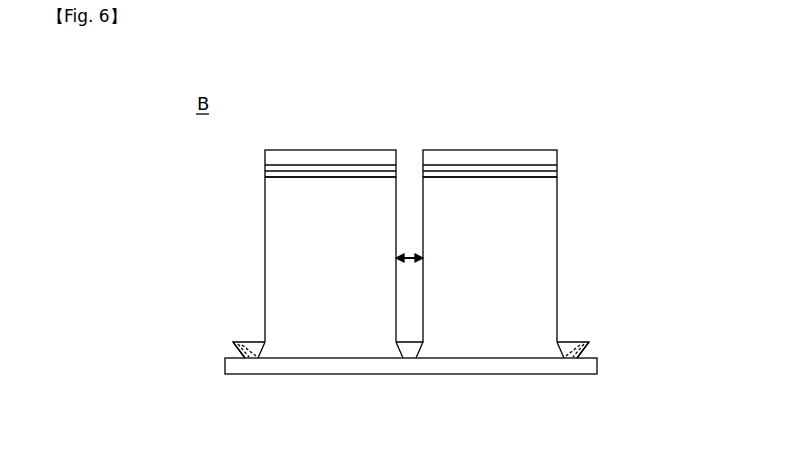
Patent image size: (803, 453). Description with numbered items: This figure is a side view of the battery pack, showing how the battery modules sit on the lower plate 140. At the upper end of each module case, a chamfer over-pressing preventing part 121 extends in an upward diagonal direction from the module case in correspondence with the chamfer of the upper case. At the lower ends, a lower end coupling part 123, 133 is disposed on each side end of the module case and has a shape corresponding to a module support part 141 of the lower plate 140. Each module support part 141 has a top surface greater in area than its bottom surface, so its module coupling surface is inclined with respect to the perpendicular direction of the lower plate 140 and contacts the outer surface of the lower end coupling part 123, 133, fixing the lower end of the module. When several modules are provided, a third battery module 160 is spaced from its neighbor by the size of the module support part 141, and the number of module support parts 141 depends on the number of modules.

The first chamfer over-pressing preventing part 121 is at (329, 158).
The lower end coupling part 123 is at (265, 375).
The lower end coupling part 133 is at (397, 376).
The lower plate 140 is at (535, 367).
The module support part 141 is at (247, 340).
The third battery module 160 is at (547, 253).